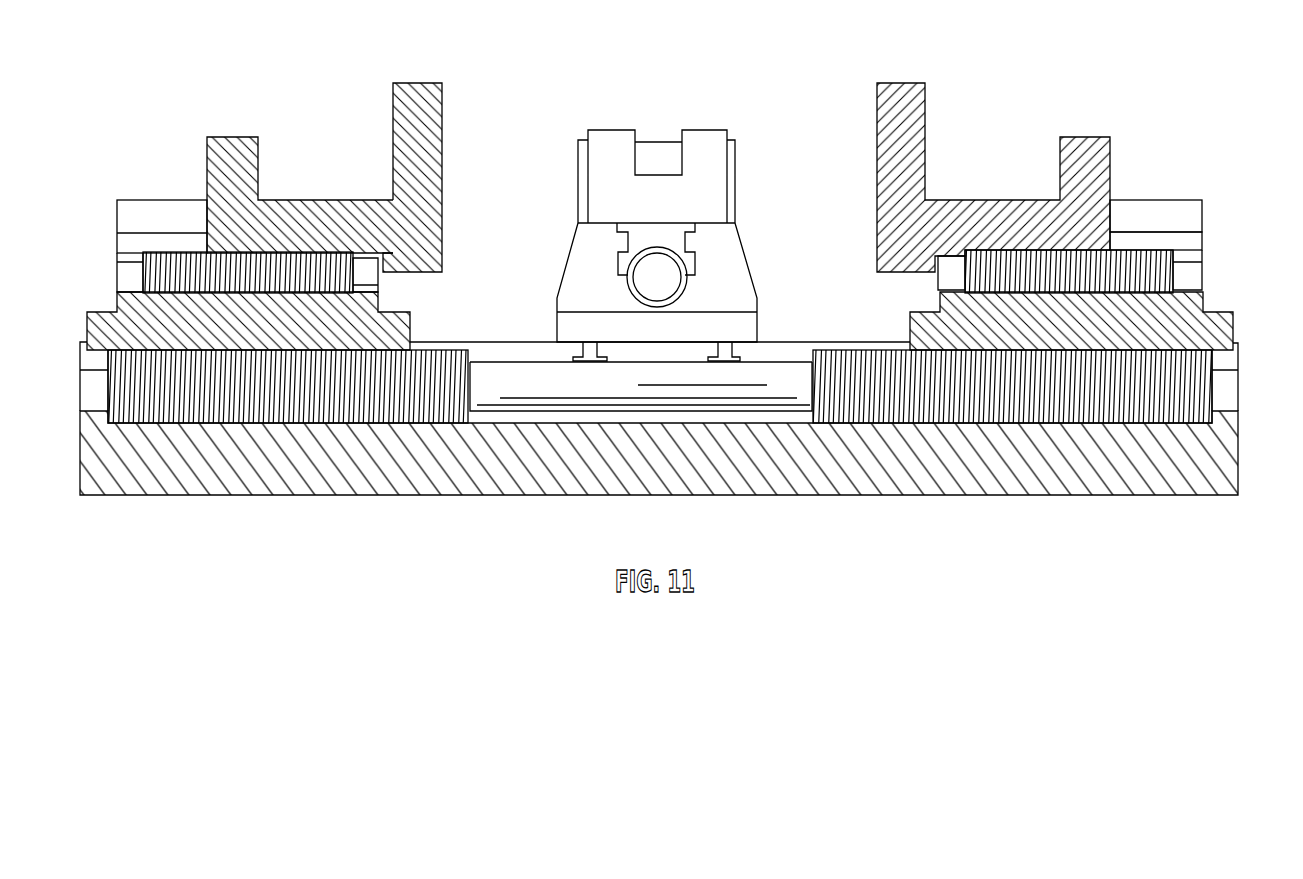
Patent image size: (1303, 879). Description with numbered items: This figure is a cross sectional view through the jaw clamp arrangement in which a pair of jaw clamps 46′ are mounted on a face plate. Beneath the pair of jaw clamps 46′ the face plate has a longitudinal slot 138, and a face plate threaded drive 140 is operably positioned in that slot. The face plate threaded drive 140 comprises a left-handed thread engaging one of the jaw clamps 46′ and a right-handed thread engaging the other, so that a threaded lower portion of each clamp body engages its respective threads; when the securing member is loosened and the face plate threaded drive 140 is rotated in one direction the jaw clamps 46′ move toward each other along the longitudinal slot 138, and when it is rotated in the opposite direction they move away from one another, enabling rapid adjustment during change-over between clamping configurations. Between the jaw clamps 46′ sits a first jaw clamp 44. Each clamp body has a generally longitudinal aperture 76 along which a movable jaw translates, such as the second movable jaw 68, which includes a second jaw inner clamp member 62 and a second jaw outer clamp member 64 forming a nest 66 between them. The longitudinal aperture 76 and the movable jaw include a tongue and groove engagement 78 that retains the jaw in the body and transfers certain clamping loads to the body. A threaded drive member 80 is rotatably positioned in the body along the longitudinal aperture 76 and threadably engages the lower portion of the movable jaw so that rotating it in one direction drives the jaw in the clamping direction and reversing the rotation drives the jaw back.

The first jaw clamp 44 is at (570, 253).
The jaw clamp 46′ is at (685, 166).
The second jaw inner clamp member 62 is at (877, 138).
The second jaw outer clamp member 64 is at (1090, 138).
The nest 66 is at (928, 131).
The second movable jaw 68 is at (443, 132).
The longitudinal aperture 76 is at (1167, 215).
The tongue and groove engagement 78 is at (1150, 242).
The threaded drive member 80 is at (120, 278).
The longitudinal slot 138 is at (515, 352).
The face plate threaded drive 140 is at (640, 390).